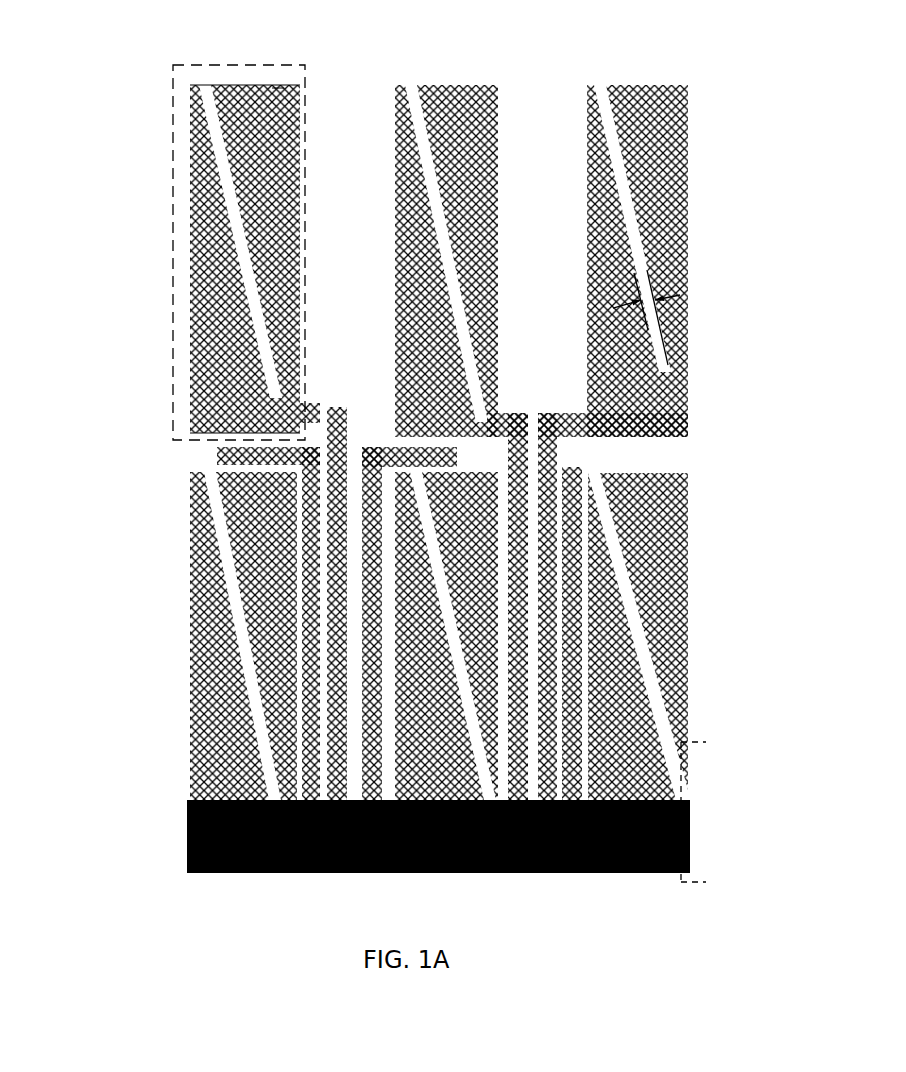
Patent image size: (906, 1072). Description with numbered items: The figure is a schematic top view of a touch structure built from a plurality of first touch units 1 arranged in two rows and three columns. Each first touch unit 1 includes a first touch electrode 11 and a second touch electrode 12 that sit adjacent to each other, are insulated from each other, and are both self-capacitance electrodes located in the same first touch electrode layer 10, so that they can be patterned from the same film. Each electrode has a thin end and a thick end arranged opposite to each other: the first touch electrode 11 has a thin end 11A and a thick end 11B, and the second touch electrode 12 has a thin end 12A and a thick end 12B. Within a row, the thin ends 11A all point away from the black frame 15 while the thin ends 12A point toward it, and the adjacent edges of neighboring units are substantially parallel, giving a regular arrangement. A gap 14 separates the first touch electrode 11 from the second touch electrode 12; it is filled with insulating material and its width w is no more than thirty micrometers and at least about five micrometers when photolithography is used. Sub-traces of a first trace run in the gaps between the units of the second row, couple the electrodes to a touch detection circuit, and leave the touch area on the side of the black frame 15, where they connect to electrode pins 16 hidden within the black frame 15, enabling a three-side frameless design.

The first touch unit 1 is at (203, 238).
The first touch electrode layer 10 is at (414, 459).
The first touch electrode 11 is at (200, 241).
The thin end of first touch electrode 11A is at (192, 90).
The thick end of first touch electrode 11B is at (198, 432).
The second touch electrode 12 is at (268, 181).
The thin end of second touch electrode 12A is at (290, 405).
The thick end of second touch electrode 12B is at (278, 90).
The gap 14 is at (605, 118).
The black frame 15 is at (690, 868).
The electrode pin 16 is at (690, 826).
The width of the gap w is at (650, 300).